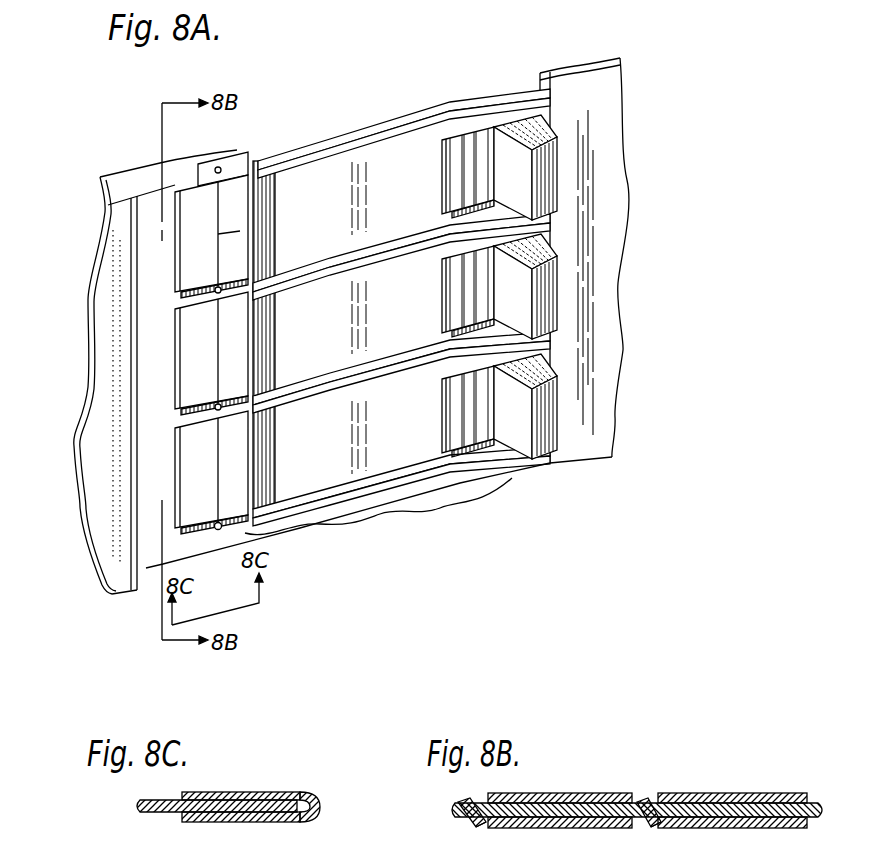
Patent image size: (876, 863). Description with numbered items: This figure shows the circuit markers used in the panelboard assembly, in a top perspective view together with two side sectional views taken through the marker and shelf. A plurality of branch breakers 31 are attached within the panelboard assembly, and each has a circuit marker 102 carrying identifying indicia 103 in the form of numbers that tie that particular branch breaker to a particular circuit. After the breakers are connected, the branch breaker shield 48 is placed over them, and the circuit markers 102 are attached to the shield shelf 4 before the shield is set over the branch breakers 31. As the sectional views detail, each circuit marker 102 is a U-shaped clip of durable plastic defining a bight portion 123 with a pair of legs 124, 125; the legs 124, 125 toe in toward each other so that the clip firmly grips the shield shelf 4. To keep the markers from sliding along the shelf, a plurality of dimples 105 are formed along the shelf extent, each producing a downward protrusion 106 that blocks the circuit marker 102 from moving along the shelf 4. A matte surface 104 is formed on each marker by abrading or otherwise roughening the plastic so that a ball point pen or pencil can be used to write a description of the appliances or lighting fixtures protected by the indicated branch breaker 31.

In FIG. 8A, the shield shelf 4 is at (200, 172).
In FIG. 8C, the shield shelf 4 is at (147, 812).
In FIG. 8B, the shield shelf 4 is at (455, 804).
In FIG. 8A, the branch breaker 31 is at (335, 222).
In FIG. 8A, the branch breaker shield 48 is at (512, 478).
In FIG. 8A, the circuit marker 102 is at (163, 236).
In FIG. 8C, the circuit marker 102 is at (275, 796).
In FIG. 8B, the circuit marker 102 is at (727, 788).
In FIG. 8A, the identifying indicia 103 is at (238, 233).
In FIG. 8A, the matte surface 104 is at (228, 328).
In FIG. 8A, the dimple 105 is at (245, 531).
In FIG. 8B, the dimple 105 is at (478, 802).
In FIG. 8B, the downward protrusion 106 is at (476, 826).
In FIG. 8C, the bight portion 123 is at (314, 808).
In FIG. 8C, the leg 124 is at (200, 822).
In FIG. 8C, the leg 125 is at (210, 792).